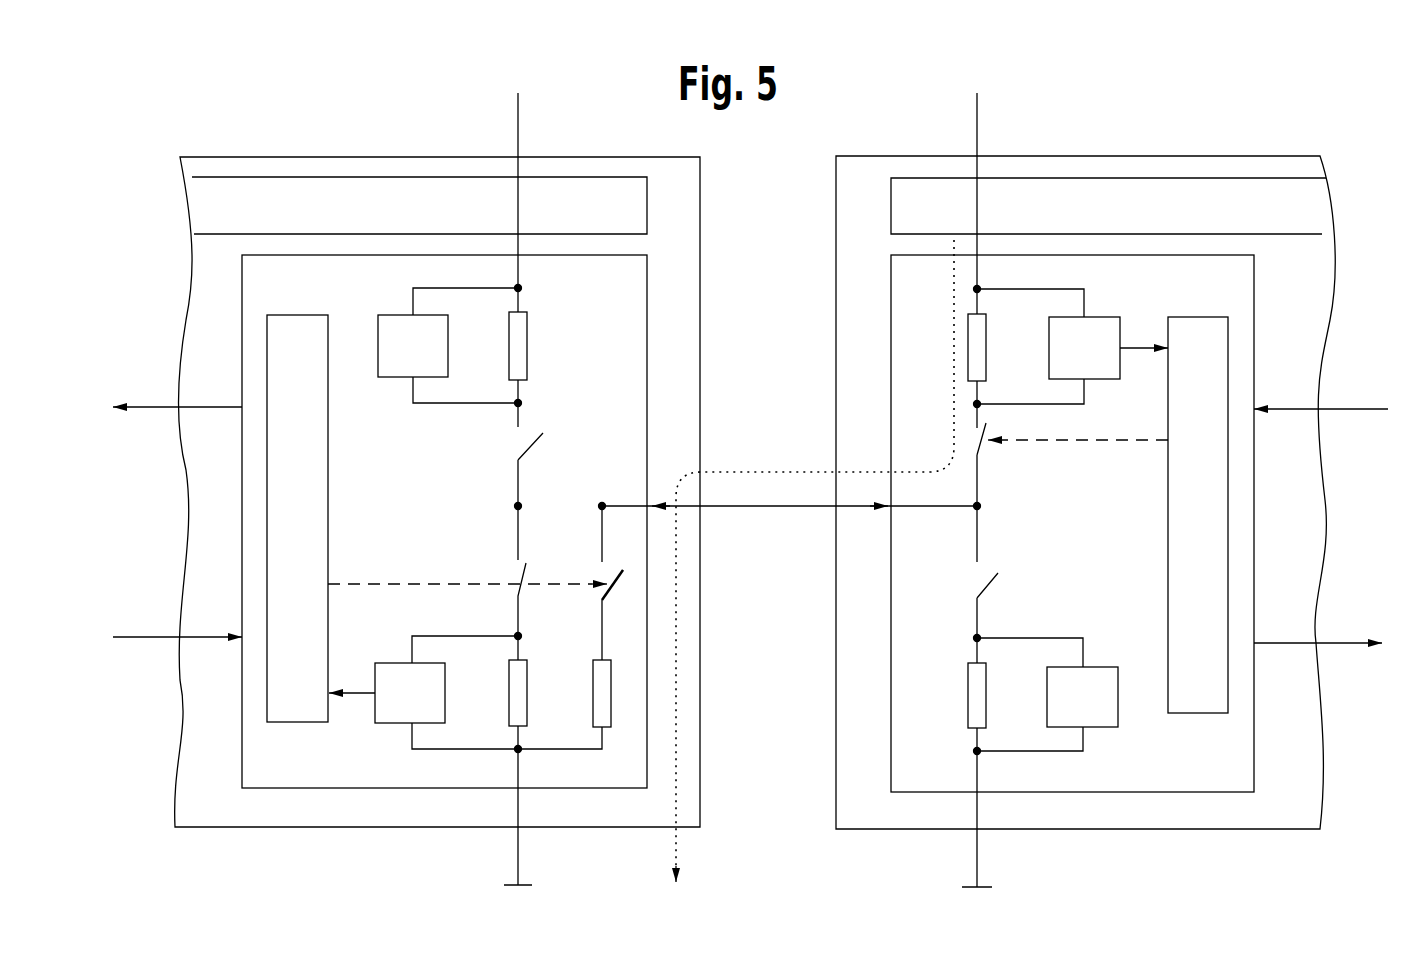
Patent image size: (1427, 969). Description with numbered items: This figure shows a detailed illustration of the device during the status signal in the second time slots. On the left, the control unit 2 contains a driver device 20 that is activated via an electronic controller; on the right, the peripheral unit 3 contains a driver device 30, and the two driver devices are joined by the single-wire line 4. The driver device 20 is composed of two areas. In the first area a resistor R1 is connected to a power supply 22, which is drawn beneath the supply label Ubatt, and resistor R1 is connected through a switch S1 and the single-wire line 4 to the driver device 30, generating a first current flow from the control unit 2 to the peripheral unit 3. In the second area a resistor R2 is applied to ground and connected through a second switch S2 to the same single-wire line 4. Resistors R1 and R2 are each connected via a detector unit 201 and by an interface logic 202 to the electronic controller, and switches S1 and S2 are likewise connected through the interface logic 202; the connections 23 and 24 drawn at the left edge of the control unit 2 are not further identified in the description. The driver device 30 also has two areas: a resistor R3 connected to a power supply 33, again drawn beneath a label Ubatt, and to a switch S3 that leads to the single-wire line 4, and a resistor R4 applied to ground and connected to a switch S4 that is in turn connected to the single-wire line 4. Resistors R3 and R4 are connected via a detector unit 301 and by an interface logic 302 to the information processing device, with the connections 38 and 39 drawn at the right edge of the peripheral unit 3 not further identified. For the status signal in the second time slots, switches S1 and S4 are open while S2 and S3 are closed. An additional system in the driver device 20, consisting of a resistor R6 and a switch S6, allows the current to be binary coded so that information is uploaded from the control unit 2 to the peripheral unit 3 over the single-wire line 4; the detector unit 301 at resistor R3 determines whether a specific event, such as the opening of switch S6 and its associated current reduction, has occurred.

The control unit 2 is at (231, 156).
The peripheral unit 3 is at (927, 155).
The single-wire line 4 is at (757, 507).
The driver device 20 is at (318, 301).
The power supply 22 is at (318, 225).
The output signal 23 is at (153, 405).
The input signal 24 is at (130, 636).
The driver device 30 is at (943, 301).
The power supply 33 is at (953, 221).
The input signal 38 is at (1372, 407).
The output signal 39 is at (1343, 642).
The detector unit 201 is at (441, 359).
The interface logic 202 is at (323, 366).
The detector unit 301 is at (1112, 364).
The interface logic 302 is at (1225, 364).
The resistor R1 is at (518, 342).
The resistor R2 is at (518, 692).
The resistor R3 is at (977, 348).
The resistor R4 is at (977, 694).
The resistor R6 is at (602, 692).
The switch S1 is at (530, 441).
The switch S2 is at (518, 590).
The switch S3 is at (983, 450).
The switch S4 is at (988, 585).
The switch S6 is at (620, 570).
The battery voltage Ubatt is at (482, 200).